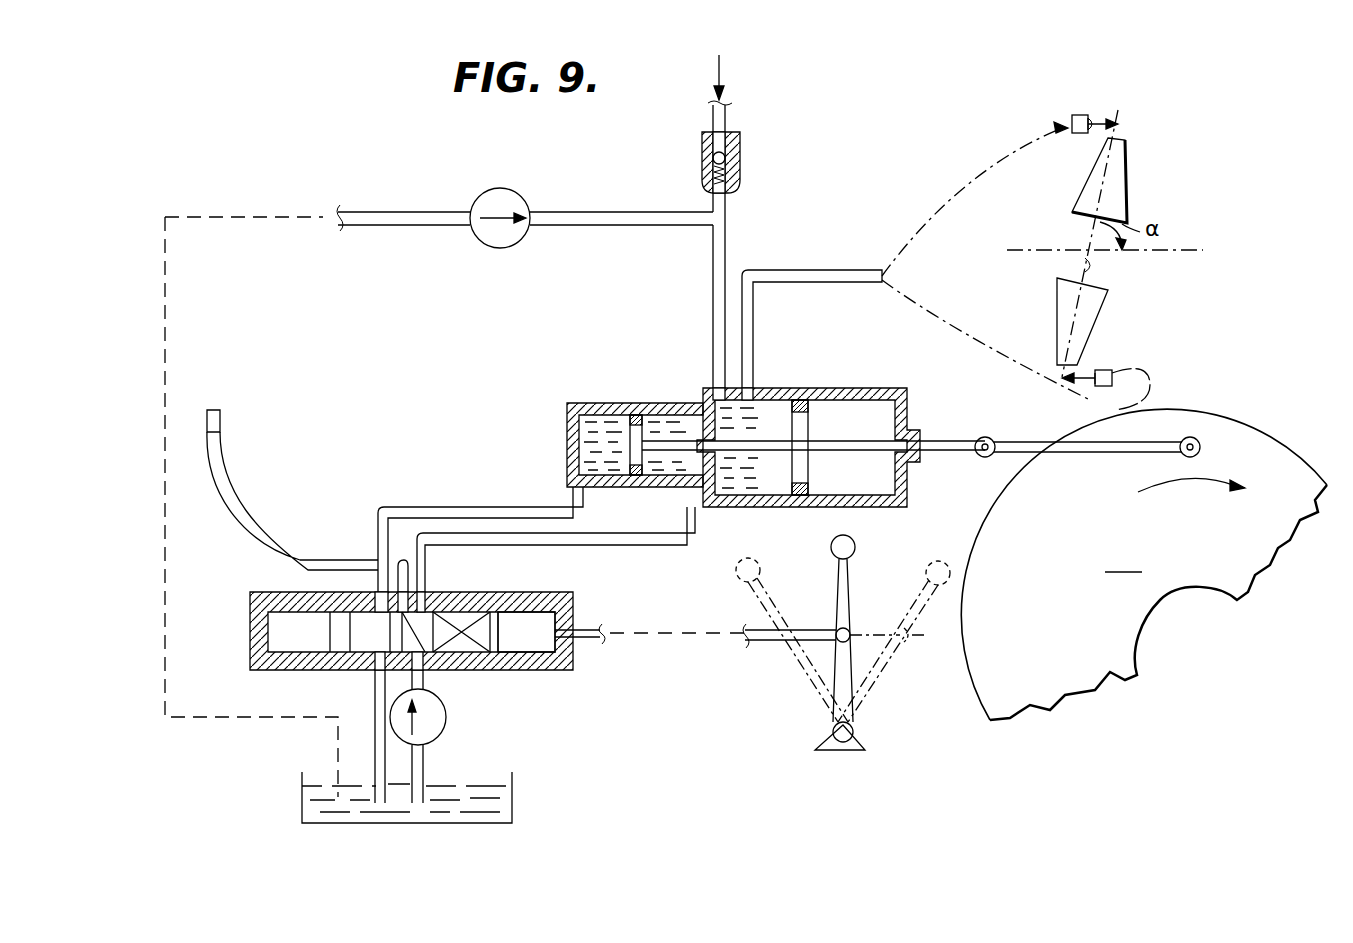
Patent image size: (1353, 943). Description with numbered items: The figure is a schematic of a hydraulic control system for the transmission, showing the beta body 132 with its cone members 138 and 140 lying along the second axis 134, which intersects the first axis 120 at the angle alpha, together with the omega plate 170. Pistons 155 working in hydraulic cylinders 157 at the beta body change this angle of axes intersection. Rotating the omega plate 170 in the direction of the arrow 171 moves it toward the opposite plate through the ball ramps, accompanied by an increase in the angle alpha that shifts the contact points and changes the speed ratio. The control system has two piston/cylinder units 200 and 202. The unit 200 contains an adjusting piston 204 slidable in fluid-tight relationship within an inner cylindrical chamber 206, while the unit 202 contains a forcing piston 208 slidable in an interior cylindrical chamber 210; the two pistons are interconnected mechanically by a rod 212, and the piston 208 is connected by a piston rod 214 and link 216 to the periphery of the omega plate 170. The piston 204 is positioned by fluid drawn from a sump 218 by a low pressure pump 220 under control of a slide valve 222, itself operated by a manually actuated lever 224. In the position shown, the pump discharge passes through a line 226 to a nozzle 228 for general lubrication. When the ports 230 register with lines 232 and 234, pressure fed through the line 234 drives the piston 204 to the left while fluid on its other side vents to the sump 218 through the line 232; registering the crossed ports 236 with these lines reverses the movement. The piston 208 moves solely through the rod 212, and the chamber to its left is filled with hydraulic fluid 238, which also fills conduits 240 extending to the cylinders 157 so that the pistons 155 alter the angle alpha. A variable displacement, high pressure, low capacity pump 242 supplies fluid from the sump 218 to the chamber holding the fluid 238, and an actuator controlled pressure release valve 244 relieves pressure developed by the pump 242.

The first axis 120 is at (1203, 248).
The beta body 132 is at (1082, 220).
The second axis 134 is at (1092, 266).
The cone member 138 is at (1127, 180).
The cone member 140 is at (1085, 322).
The hydraulic pistons 155 is at (1084, 116).
The hydraulic cylinders 157 is at (1076, 134).
The omega plate 170 is at (1144, 564).
The arrow 171 is at (1188, 486).
The piston/cylinder unit 200 is at (603, 446).
The piston/cylinder unit 202 is at (808, 436).
The piston 204 is at (632, 478).
The inner cylindrical chamber 206 is at (580, 426).
The piston 208 is at (820, 427).
The interior cylindrical chamber 210 is at (838, 492).
The rod 212 is at (737, 455).
The piston rod 214 is at (946, 443).
The link 216 is at (1010, 452).
The sump 218 is at (505, 785).
The low pressure pump 220 is at (447, 716).
The slide valve 222 is at (427, 636).
The manually actuated lever 224 is at (855, 548).
The line 226 is at (350, 560).
The nozzle 228 is at (222, 426).
The ports 230 is at (378, 650).
The line 232 is at (488, 507).
The line 234 is at (628, 545).
The crossed ports 236 is at (470, 614).
The hydraulic fluid 238 is at (752, 398).
The conduits 240 is at (968, 176).
The variable displacement pump 242 is at (518, 192).
The pressure release valve 244 is at (742, 160).